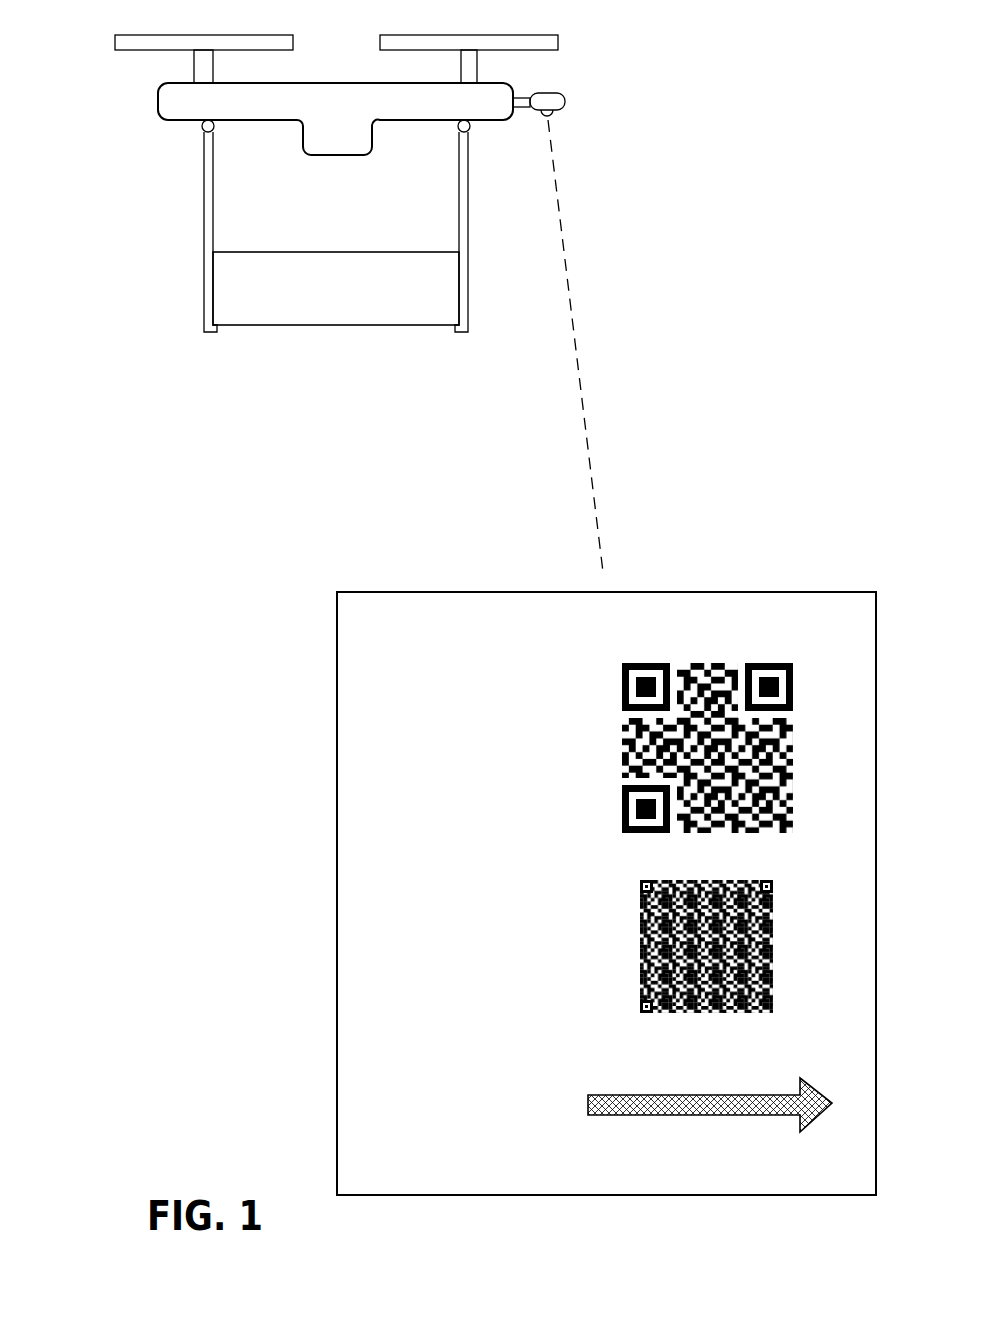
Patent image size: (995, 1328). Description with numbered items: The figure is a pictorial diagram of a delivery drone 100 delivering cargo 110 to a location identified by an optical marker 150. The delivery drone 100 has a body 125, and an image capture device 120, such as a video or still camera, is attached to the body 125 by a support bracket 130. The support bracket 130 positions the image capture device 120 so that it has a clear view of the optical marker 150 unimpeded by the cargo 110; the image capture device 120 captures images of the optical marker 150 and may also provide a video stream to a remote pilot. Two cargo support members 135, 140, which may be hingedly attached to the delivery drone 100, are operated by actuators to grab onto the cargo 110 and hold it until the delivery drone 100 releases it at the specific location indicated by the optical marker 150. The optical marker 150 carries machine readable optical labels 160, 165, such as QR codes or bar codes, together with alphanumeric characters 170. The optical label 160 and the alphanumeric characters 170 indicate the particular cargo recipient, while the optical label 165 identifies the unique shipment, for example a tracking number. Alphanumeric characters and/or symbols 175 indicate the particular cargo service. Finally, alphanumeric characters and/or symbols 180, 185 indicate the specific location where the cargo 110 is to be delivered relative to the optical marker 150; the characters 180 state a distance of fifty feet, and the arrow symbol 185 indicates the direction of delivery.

The delivery drone 100 is at (118, 97).
The cargo 110 is at (328, 300).
The image capture device 120 is at (563, 101).
The body 125 is at (178, 104).
The support bracket 130 is at (522, 97).
The cargo support member 135 is at (468, 272).
The cargo support member 140 is at (204, 272).
The optical marker 150 is at (708, 592).
The optical label 160 is at (818, 702).
The optical label 165 is at (800, 921).
The alphanumeric characters 170 is at (370, 908).
The alphanumeric characters and/or symbols 175 is at (373, 693).
The alphanumeric characters and/or symbols 180 is at (588, 1168).
The symbol 185 is at (718, 1133).